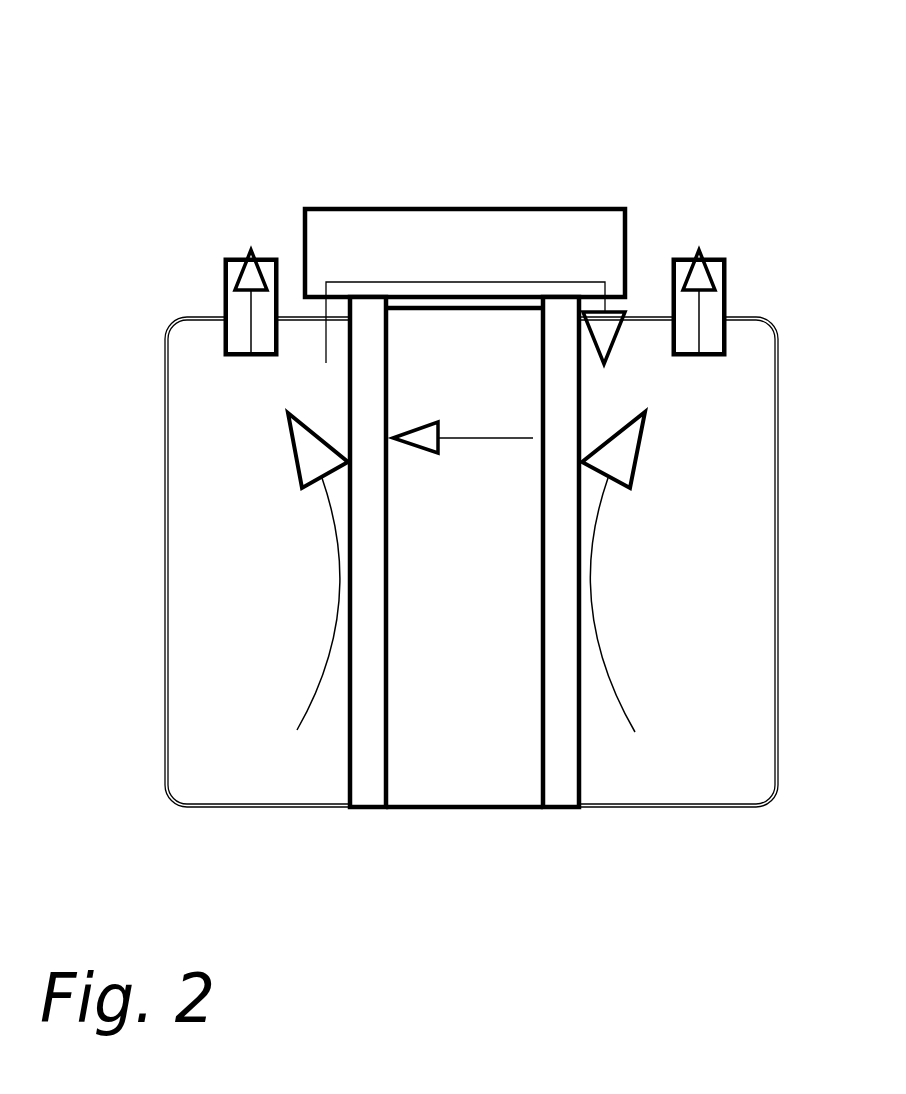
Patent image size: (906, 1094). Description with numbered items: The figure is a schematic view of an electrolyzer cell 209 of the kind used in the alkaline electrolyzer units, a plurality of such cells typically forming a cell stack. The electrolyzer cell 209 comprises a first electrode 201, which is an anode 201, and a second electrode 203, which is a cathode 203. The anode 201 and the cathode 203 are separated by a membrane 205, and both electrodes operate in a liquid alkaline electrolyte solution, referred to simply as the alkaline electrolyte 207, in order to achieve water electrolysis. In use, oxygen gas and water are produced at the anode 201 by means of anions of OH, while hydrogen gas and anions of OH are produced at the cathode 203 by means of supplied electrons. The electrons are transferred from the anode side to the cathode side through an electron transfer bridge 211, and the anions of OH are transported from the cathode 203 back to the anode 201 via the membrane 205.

The first electrode (anode) 201 is at (368, 797).
The second electrode (cathode) 203 is at (560, 795).
The membrane 205 is at (470, 767).
The alkaline electrolyte 207 is at (242, 787).
The electrolyzer cell 209 is at (186, 110).
The electron transfer bridge 211 is at (373, 208).